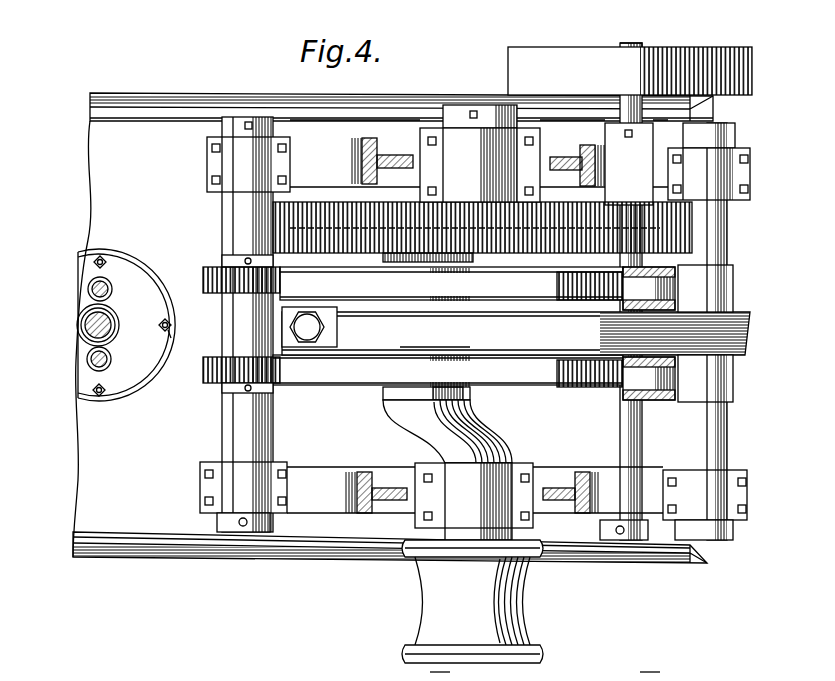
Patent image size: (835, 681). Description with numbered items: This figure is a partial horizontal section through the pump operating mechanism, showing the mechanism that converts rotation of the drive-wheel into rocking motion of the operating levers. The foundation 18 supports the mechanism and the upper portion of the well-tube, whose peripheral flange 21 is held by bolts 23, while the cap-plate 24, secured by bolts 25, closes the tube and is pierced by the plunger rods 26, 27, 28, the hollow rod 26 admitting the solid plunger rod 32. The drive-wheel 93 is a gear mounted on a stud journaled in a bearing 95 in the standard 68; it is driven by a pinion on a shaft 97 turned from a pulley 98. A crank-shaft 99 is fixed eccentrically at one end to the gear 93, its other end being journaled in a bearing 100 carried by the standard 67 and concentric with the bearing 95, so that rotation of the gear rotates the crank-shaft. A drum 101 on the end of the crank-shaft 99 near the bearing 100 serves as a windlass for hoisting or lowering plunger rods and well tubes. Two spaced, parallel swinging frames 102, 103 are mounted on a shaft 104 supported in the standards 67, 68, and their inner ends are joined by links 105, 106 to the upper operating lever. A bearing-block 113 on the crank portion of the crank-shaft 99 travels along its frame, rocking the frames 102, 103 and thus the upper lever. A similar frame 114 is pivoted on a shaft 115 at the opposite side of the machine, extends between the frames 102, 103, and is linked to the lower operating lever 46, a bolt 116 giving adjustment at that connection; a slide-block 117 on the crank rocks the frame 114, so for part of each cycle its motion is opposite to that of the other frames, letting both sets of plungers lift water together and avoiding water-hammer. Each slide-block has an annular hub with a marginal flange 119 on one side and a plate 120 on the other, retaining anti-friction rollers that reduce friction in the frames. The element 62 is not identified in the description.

The foundation 18 is at (187, 135).
The peripheral flange 21 is at (168, 346).
The bolts 23 is at (171, 322).
The cap-plate 24 is at (135, 299).
The bolts 25 is at (108, 258).
The plunger rod 26 is at (116, 325).
The plunger rod 27 is at (106, 286).
The plunger rod 28 is at (131, 327).
The solid plunger rod 32 is at (108, 350).
The lower operating lever 46 is at (392, 675).
The lower member 62 is at (657, 675).
The standard 67 is at (365, 480).
The standard 68 is at (477, 151).
The drive-wheel 93 is at (330, 206).
The bearing 95 is at (460, 150).
The shaft 97 is at (625, 94).
The pulley 98 is at (726, 60).
The crank-shaft 99 is at (496, 432).
The bearing 100 is at (500, 494).
The drum 101 is at (440, 617).
The swinging frame 102 is at (585, 382).
The swinging frame 103 is at (580, 292).
The shaft 104 is at (240, 440).
The link 105 is at (656, 376).
The link 106 is at (676, 272).
The bearing-block 113 is at (451, 284).
The frame 114 is at (725, 340).
The shaft 115 is at (720, 236).
The bolt 116 is at (307, 326).
The slide-block 117 is at (485, 349).
The marginal flange 119 is at (435, 332).
The plate 120 is at (372, 392).